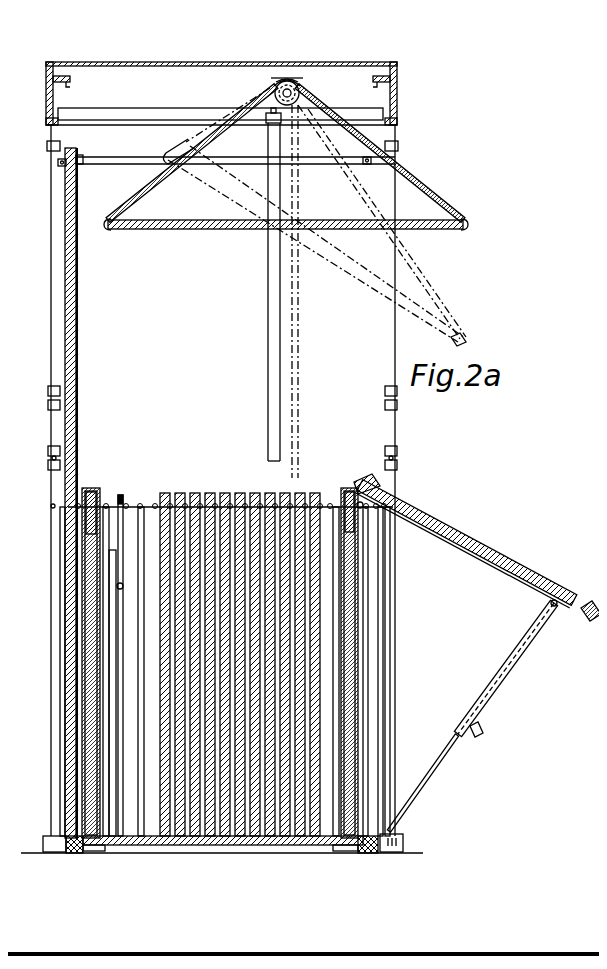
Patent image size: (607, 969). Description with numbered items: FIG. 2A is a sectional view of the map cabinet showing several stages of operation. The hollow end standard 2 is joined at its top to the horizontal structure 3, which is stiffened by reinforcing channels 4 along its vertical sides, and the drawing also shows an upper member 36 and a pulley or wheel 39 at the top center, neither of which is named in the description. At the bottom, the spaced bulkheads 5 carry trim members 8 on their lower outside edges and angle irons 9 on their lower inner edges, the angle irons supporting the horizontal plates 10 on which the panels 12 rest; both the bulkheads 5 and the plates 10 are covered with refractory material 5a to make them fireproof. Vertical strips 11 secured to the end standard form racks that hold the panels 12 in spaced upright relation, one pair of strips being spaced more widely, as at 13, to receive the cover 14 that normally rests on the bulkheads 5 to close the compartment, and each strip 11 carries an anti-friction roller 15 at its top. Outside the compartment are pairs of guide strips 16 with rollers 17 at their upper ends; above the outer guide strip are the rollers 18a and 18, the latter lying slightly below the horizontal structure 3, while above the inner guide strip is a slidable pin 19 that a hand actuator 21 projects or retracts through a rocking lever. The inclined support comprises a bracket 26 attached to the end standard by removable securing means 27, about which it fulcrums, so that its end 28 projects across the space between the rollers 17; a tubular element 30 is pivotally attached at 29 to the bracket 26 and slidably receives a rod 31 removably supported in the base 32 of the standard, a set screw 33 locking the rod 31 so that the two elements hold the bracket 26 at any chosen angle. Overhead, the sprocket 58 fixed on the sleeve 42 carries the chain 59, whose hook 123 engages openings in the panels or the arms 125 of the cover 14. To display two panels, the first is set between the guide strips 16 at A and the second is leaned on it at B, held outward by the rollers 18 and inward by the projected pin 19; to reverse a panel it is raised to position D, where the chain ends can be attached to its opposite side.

The end standard 2 is at (41, 271).
The horizontal structure 3 is at (38, 94).
The reinforcing channel 4 is at (58, 74).
The bulkhead 5 is at (85, 590).
The refractory material 5a is at (80, 566).
The trim member 8 is at (56, 846).
The angle iron 9 is at (98, 845).
The horizontal plate 10 is at (150, 840).
The strip 11 is at (150, 710).
The panel 12 is at (69, 304).
The cover space 13 is at (135, 645).
The cover 14 is at (112, 612).
The anti-friction roller 15 is at (162, 494).
The guide strip 16 is at (70, 540).
The anti-friction roller 17 is at (75, 485).
The roller 18 is at (50, 157).
The roller 18a is at (56, 388).
The slidable pin 19 is at (82, 149).
The hand actuator 21 is at (40, 455).
The bracket 26 is at (450, 530).
The securing means 27 is at (43, 498).
The bracket end 28 is at (354, 476).
The pivot 29 is at (540, 595).
The tubular element 30 is at (510, 652).
The rod 31 is at (432, 760).
The base 32 is at (38, 828).
The set screw 33 is at (475, 723).
The rail 36 is at (147, 99).
The pulley 39 is at (290, 84).
The sleeve 42 is at (266, 80).
The sprocket 58 is at (254, 96).
The chain 59 is at (148, 172).
The hook 123 is at (100, 222).
The arm 125 is at (113, 487).
The first displayed panel position A is at (62, 676).
The second displayed panel position B is at (69, 345).
The elevated panel position D is at (259, 355).